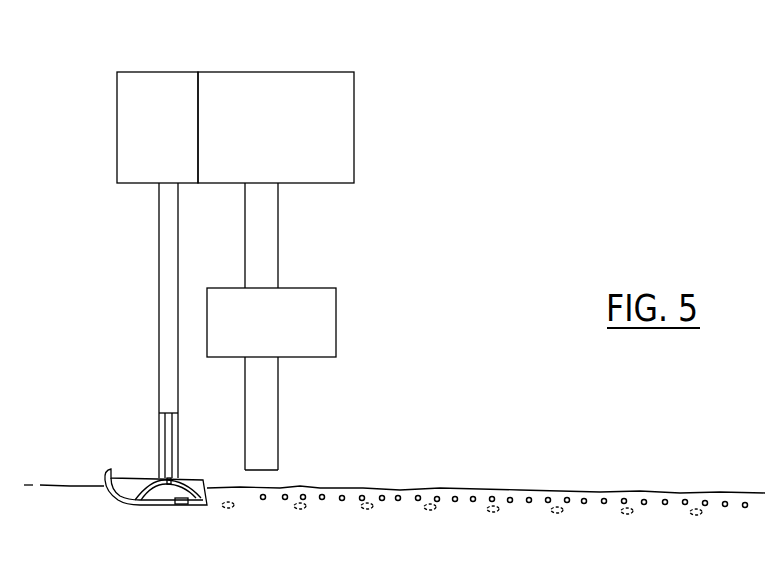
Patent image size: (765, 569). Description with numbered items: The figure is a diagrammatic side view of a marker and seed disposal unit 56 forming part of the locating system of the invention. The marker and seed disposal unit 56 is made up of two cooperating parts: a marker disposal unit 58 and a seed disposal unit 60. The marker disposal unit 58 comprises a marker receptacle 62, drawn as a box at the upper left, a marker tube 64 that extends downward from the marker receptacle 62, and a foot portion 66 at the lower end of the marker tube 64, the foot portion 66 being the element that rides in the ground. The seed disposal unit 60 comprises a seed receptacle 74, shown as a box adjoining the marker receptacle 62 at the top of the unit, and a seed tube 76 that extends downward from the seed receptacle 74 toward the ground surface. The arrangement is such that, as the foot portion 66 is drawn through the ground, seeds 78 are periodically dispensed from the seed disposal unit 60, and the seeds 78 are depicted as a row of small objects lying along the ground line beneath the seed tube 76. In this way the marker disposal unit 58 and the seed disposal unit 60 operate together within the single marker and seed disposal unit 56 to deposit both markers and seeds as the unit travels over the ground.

The marker and seed disposal unit 56 is at (598, 170).
The marker disposal unit 58 is at (98, 139).
The seed disposal unit 60 is at (392, 185).
The marker receptacle 62 is at (155, 72).
The marker tube 64 is at (158, 328).
The foot portion 66 is at (126, 444).
The seed receptacle 74 is at (355, 102).
The seed tube 76 is at (278, 242).
The seeds 78 is at (508, 498).